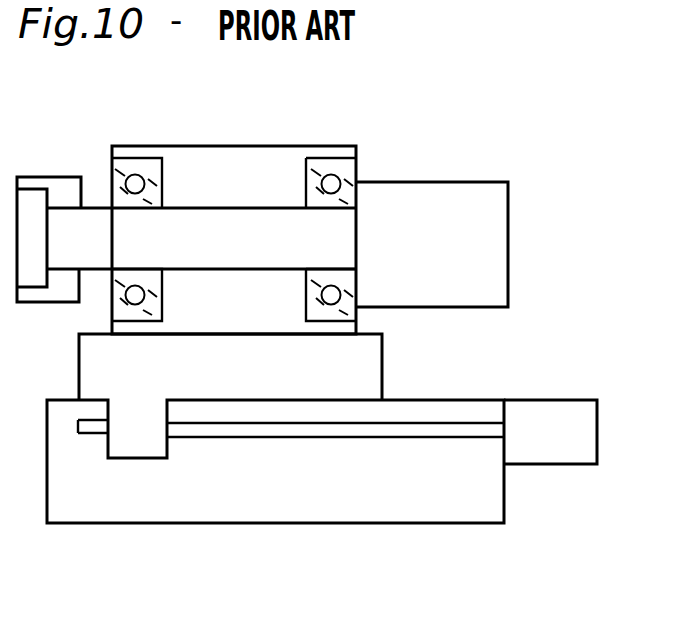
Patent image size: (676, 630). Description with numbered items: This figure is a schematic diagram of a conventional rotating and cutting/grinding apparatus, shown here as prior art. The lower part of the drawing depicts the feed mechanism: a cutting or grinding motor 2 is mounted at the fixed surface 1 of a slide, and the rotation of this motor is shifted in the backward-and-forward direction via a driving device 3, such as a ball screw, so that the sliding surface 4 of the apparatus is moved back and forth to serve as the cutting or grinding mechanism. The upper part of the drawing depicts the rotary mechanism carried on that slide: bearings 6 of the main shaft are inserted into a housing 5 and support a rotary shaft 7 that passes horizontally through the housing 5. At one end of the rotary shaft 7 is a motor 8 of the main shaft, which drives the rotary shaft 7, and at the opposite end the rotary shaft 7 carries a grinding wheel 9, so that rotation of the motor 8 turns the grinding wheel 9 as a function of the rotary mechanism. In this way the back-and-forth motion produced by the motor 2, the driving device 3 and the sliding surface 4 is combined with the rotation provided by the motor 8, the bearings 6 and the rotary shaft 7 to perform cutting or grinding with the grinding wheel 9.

The fixed surface 1 is at (452, 505).
The cutting or grinding motor 2 is at (561, 418).
The driving device 3 is at (322, 437).
The sliding surface 4 is at (367, 372).
The housing 5 is at (263, 160).
The bearings 6 is at (145, 165).
The rotary shaft 7 is at (100, 222).
The motor of the main shaft 8 is at (473, 198).
The grinding wheel 9 is at (47, 185).